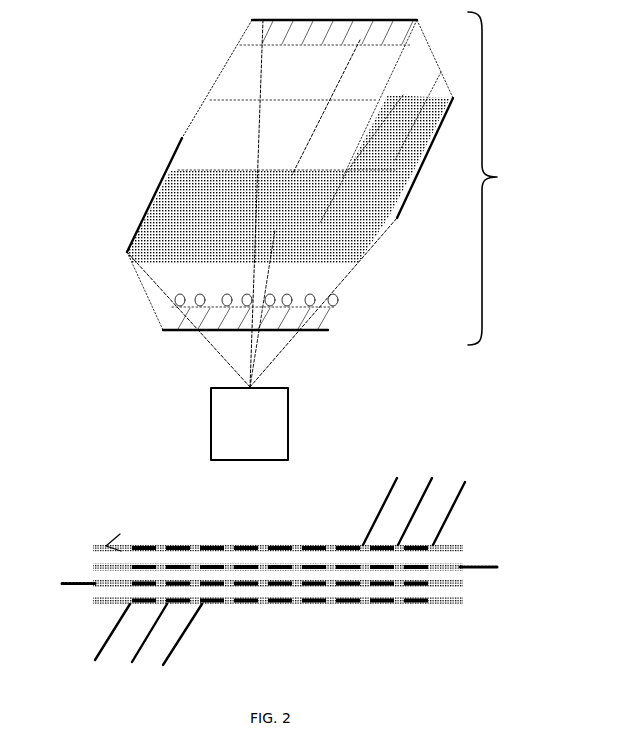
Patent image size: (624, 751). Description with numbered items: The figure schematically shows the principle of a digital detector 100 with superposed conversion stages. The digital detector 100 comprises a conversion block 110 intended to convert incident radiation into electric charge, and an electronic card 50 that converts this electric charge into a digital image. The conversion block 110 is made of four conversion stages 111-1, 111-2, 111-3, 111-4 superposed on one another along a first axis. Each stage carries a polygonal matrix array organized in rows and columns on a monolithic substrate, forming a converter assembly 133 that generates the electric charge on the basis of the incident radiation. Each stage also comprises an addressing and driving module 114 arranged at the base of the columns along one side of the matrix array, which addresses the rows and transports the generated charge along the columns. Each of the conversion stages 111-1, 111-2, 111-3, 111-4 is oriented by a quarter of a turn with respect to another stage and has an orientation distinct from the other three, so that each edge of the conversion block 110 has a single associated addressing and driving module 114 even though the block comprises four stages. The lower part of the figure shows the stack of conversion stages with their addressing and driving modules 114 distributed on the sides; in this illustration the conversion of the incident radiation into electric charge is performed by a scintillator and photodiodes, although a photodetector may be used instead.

The digital detector 100 is at (84, 23).
The conversion block 110 is at (329, 199).
The conversion stage 111-1 is at (360, 284).
The conversion stage 111-2 is at (350, 253).
The conversion stage 111-3 is at (392, 96).
The conversion stage 111-4 is at (200, 118).
The addressing and driving module 114 is at (232, 32).
The electronic card 50 is at (288, 418).
The converter assembly 133 is at (104, 546).